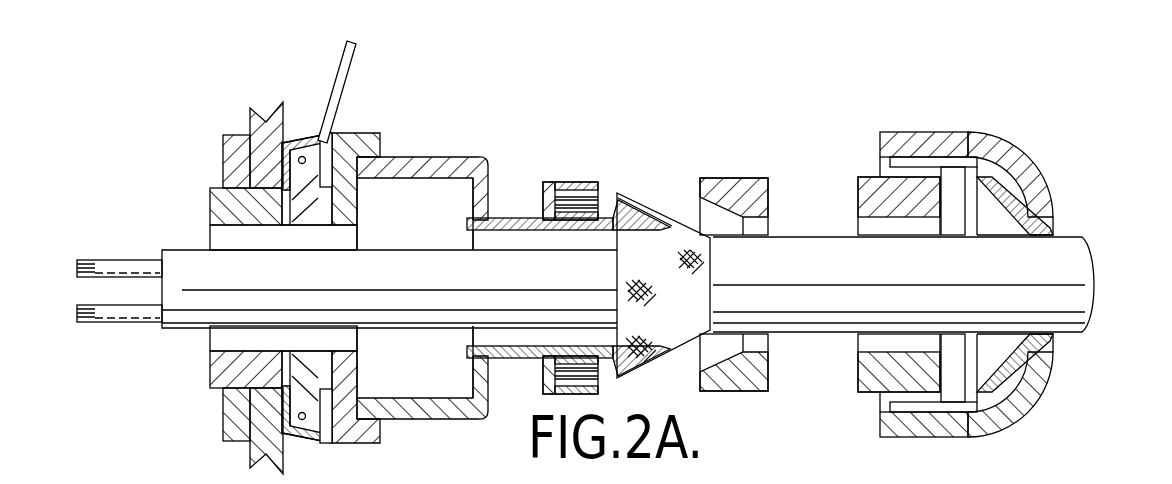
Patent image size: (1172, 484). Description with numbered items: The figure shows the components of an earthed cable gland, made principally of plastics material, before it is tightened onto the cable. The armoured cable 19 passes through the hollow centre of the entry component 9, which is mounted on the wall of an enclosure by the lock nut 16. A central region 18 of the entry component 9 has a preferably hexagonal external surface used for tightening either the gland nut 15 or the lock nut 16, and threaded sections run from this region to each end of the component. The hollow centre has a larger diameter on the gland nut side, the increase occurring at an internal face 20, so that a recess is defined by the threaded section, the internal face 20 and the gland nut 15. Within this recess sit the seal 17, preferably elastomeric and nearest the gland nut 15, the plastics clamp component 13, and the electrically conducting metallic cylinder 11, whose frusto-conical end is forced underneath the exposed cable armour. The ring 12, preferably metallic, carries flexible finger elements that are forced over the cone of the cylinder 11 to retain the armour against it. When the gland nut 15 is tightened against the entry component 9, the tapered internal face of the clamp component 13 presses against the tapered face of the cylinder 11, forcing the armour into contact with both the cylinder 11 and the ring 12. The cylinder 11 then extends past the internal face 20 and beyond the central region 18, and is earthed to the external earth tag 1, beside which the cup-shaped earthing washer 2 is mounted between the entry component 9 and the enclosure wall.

The earth tag 1 is at (362, 62).
The earthing washer 2 is at (297, 141).
The entry component 9 is at (436, 156).
The metallic cylinder 11 is at (520, 218).
The ring 12 is at (587, 182).
The clamp component 13 is at (735, 178).
The gland nut 15 is at (942, 132).
The lock nut 16 is at (210, 212).
The seal 17 is at (868, 177).
The central region 18 is at (368, 133).
The armoured cable 19 is at (192, 333).
The internal face 20 is at (357, 203).